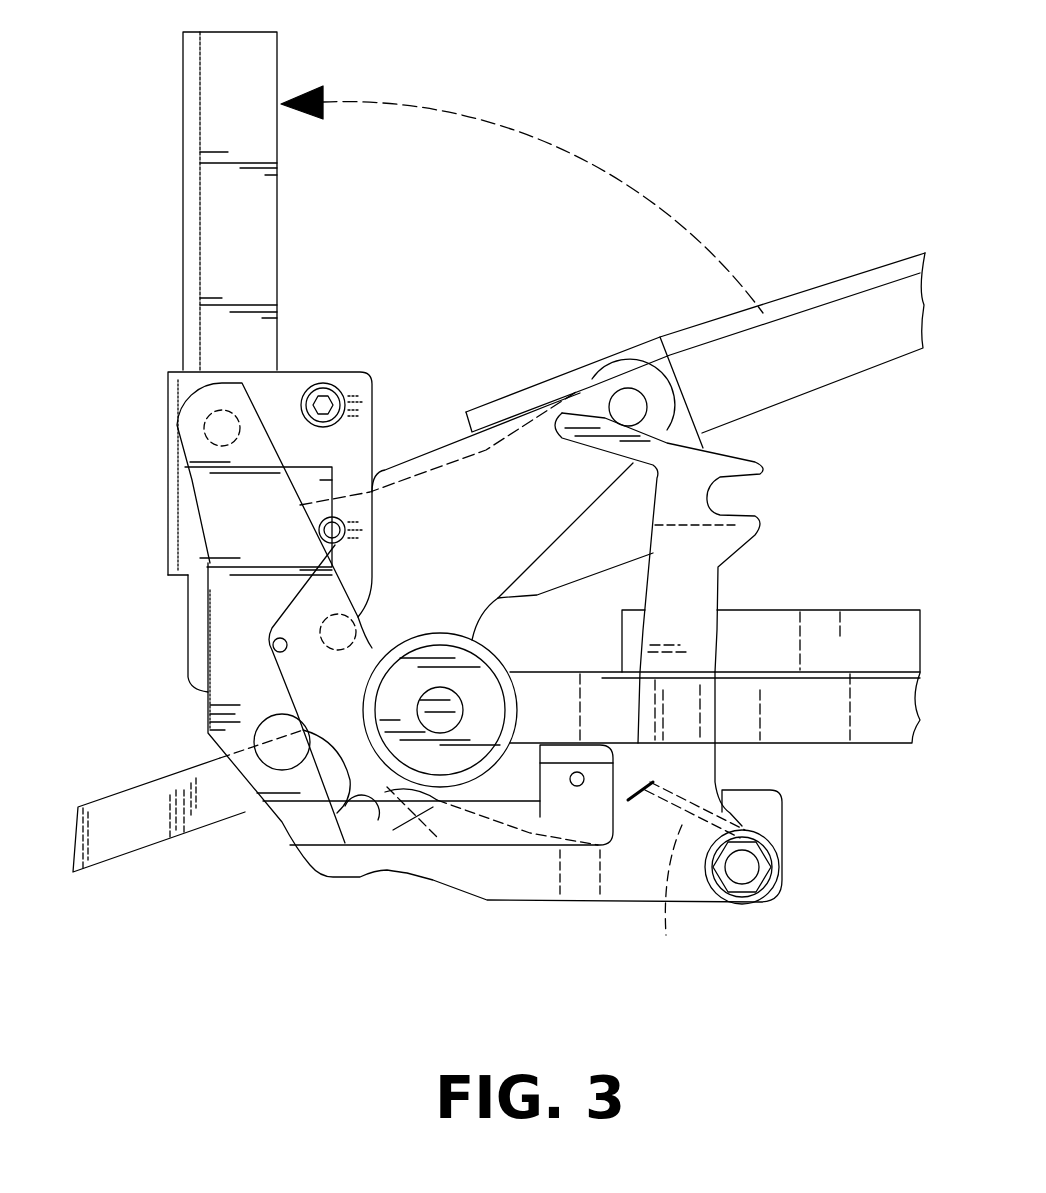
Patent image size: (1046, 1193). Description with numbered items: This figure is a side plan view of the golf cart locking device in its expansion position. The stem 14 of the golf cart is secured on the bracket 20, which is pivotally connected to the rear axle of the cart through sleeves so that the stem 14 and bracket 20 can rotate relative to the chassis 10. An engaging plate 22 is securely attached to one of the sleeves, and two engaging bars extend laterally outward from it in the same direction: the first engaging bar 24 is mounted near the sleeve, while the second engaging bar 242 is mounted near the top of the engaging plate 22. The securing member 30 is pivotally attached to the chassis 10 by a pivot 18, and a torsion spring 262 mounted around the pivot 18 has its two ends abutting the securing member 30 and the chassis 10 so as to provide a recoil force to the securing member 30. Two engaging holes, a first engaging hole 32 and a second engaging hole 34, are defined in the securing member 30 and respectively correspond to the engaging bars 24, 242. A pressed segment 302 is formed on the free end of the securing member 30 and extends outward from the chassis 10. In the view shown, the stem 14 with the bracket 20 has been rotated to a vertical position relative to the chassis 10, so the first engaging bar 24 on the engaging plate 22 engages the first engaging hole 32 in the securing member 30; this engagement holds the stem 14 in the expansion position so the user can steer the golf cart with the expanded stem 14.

The chassis 10 is at (838, 728).
The stem 14 is at (263, 268).
The pivot 18 is at (738, 872).
The bracket 20 is at (181, 456).
The engaging plate 22 is at (218, 601).
The first engaging bar 24 is at (340, 825).
The securing member 30 is at (489, 904).
The first engaging hole 32 is at (360, 843).
The second engaging hole 34 is at (712, 502).
The second engaging bar 242 is at (215, 412).
The torsion spring 262 is at (665, 900).
The pressed segment 302 is at (122, 806).